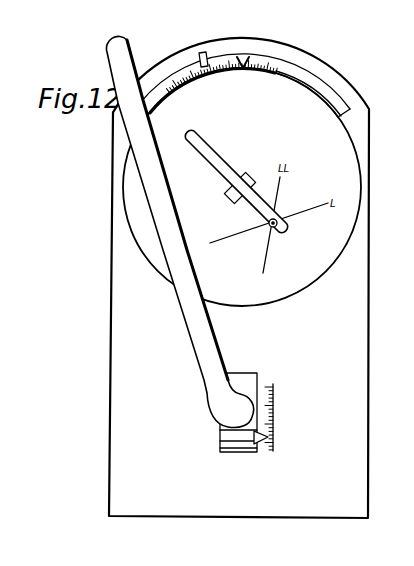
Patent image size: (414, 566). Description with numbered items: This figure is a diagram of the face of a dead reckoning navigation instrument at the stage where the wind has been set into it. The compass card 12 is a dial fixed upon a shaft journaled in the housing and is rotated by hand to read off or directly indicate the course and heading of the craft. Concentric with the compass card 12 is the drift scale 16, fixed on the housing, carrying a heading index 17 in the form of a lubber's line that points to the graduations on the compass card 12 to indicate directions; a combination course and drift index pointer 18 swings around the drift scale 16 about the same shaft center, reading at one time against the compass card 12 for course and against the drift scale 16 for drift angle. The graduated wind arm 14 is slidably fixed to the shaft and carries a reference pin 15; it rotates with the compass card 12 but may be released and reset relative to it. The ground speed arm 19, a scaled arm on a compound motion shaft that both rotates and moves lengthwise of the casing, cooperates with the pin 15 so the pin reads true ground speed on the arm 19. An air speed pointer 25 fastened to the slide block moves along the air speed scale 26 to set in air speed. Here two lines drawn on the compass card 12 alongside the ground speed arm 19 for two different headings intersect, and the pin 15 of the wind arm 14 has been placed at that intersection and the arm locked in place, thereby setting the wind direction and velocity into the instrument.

The compass card 12 is at (357, 202).
The wind arm 14 is at (199, 152).
The reference pin 15 is at (270, 228).
The drift scale 16 is at (285, 66).
The heading index 17 is at (244, 55).
The course and drift index pointer 18 is at (203, 52).
The ground speed arm 19 is at (119, 53).
The air speed pointer 25 is at (247, 438).
The air speed scale 26 is at (272, 452).